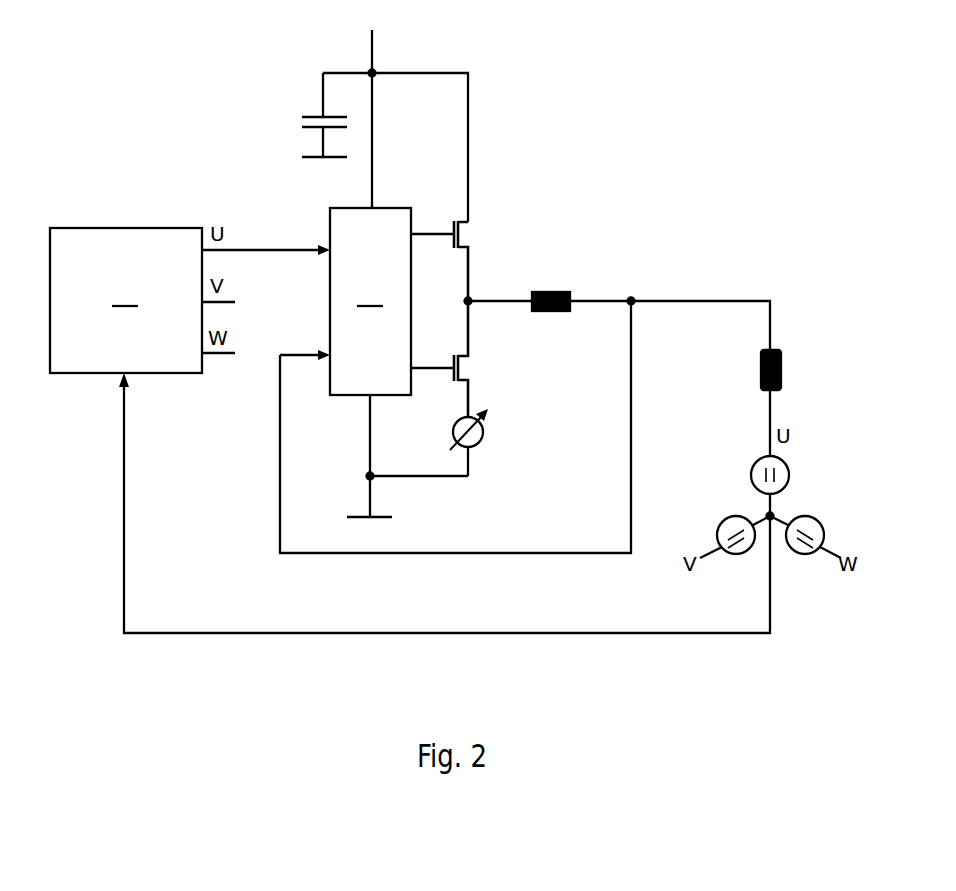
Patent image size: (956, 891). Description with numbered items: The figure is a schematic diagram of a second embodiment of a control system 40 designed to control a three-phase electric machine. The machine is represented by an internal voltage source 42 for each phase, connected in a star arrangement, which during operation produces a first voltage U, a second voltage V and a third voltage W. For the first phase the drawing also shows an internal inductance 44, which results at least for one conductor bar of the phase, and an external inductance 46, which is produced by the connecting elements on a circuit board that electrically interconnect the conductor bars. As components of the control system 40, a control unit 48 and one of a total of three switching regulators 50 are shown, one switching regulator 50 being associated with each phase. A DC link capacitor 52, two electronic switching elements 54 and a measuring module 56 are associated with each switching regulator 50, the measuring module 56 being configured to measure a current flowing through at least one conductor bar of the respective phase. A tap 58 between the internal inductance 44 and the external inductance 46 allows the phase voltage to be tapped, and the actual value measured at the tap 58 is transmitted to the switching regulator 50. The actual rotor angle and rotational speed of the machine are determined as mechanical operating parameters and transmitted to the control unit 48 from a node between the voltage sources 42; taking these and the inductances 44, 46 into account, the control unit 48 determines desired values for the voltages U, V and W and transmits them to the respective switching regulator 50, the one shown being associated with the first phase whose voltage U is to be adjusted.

The control system 40 is at (711, 186).
The internal voltage source 42 is at (789, 469).
The internal inductance 44 is at (784, 372).
The external inductance 46 is at (552, 291).
The control unit 48 is at (126, 300).
The switching regulator 50 is at (370, 301).
The DC link capacitor 52 is at (308, 122).
The electronic switching element 54 is at (490, 366).
The measuring module 56 is at (484, 430).
The tap 58 is at (633, 297).